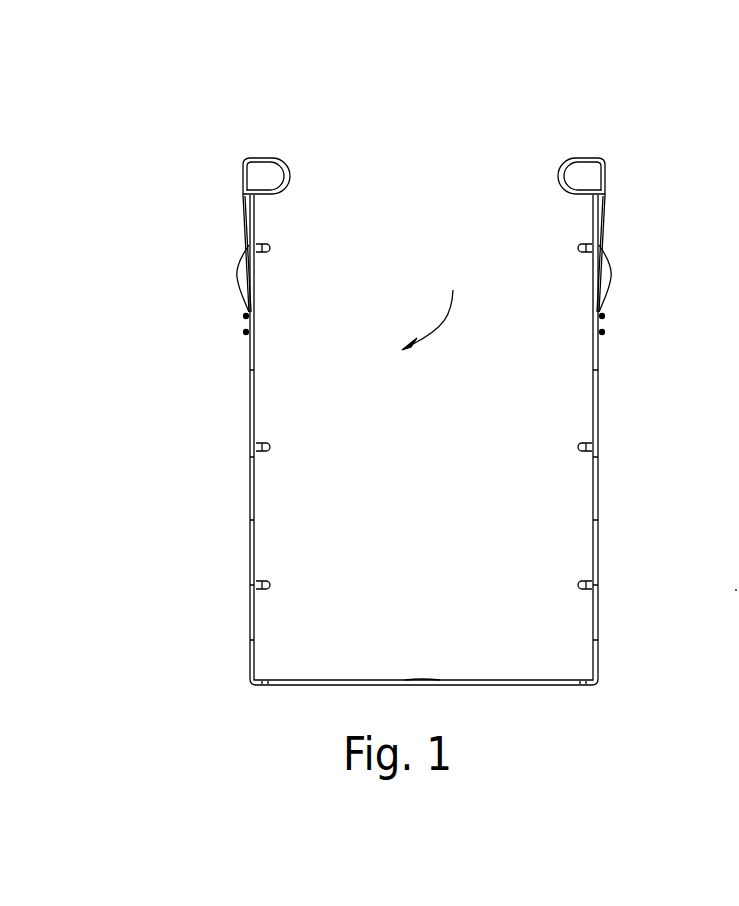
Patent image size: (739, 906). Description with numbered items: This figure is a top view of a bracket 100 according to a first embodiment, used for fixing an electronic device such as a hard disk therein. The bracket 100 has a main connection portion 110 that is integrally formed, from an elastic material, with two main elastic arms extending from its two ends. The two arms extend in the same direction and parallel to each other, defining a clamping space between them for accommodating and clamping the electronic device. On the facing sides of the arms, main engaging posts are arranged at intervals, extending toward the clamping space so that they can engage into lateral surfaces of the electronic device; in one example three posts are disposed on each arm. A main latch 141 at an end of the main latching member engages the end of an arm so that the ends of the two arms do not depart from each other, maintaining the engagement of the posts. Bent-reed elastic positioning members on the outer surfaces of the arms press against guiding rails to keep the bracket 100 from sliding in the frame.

The bracket 100 is at (393, 122).
The main connection portion 110 is at (537, 684).
The main latch 141 is at (738, 590).